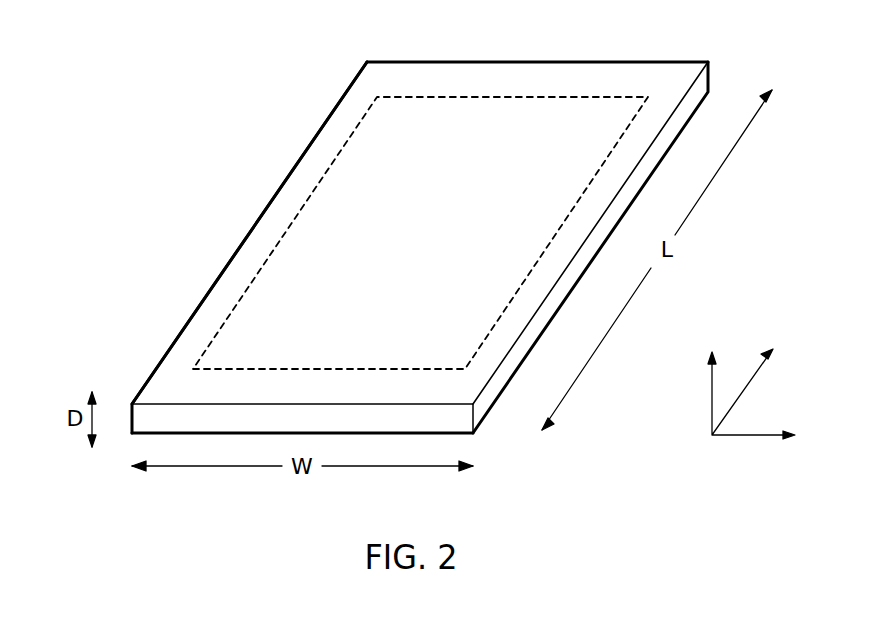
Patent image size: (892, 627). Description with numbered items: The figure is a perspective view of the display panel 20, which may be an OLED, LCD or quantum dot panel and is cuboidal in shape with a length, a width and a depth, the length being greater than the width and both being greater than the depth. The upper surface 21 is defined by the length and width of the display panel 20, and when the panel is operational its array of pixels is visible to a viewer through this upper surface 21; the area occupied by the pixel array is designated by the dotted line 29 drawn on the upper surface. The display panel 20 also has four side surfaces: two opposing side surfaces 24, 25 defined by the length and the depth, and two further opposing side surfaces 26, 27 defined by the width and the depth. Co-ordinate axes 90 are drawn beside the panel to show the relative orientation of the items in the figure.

The display panel 20 is at (420, 256).
The upper surface 21 is at (420, 203).
The side surface 24 is at (203, 297).
The side surface 25 is at (565, 282).
The side surface 26 is at (238, 420).
The side surface 27 is at (538, 62).
The dotted line 29 is at (602, 97).
The co-ordinate axes 90 is at (709, 461).